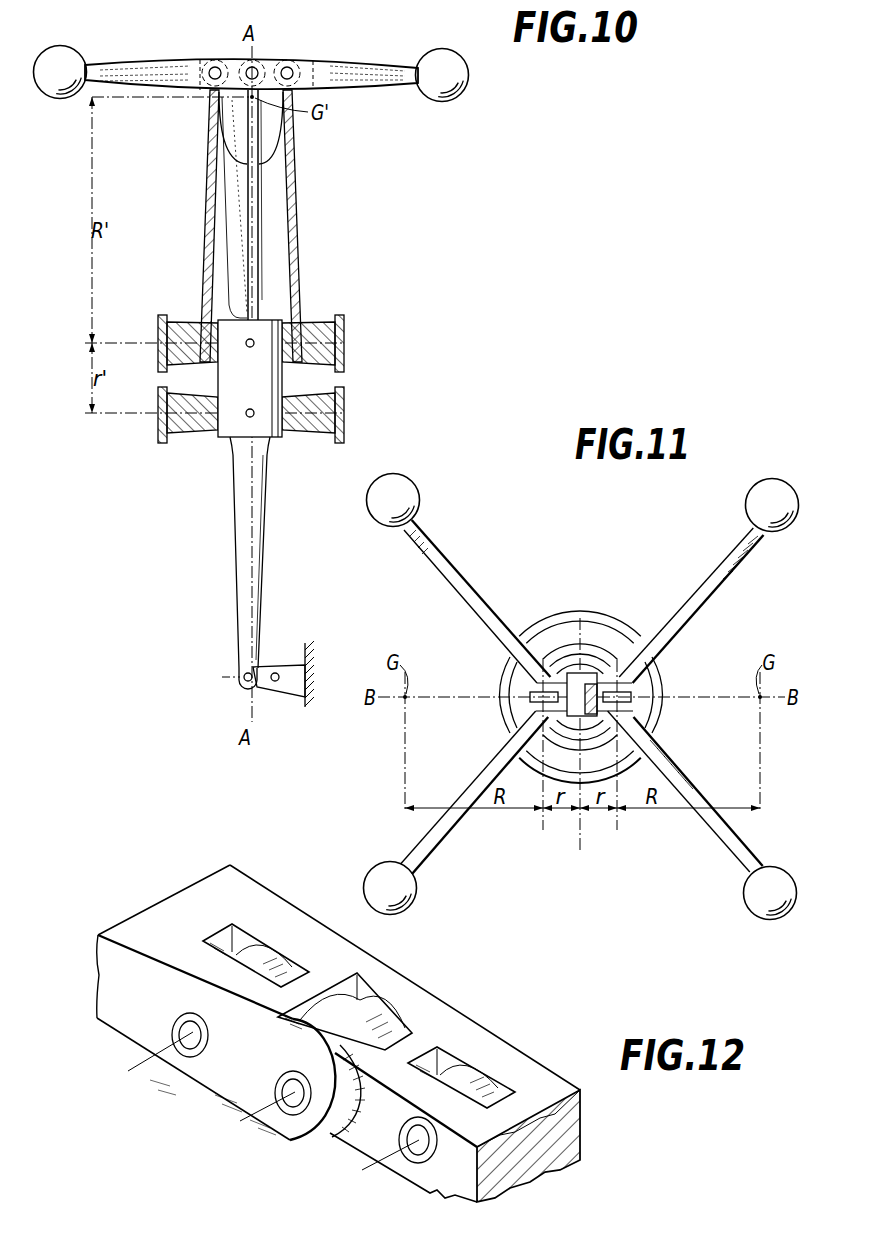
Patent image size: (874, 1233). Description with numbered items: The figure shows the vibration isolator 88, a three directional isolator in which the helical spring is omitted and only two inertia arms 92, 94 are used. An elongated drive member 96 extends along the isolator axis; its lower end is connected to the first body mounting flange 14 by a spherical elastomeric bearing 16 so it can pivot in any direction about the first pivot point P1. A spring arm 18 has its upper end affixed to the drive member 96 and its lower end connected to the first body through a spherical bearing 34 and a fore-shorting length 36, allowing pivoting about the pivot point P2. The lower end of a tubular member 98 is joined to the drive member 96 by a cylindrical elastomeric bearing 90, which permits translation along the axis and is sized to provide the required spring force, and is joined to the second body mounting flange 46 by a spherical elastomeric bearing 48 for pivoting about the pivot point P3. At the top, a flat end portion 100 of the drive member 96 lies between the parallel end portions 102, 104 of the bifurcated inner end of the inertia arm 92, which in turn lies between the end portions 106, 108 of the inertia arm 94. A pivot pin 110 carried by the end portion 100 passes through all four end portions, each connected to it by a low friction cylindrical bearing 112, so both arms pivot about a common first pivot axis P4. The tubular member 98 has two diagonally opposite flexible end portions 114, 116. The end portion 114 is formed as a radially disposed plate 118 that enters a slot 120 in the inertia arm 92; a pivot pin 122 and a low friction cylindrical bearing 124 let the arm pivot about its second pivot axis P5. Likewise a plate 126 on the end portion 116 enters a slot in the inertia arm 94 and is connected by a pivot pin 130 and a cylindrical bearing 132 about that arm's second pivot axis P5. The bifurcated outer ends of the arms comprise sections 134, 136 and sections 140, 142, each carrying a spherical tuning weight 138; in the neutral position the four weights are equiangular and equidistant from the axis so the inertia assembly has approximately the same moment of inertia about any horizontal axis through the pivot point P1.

In FIG. 10, the first body mounting flange 14 is at (345, 425).
In FIG. 10, the spherical elastomeric bearing 16 is at (308, 437).
In FIG. 10, the spring arm 18 is at (265, 542).
In FIG. 10, the spherical bearing 34 is at (263, 666).
In FIG. 10, the fore-shorting length 36 is at (262, 690).
In FIG. 10, the second body mounting flange 46 is at (345, 337).
In FIG. 10, the spherical elastomeric bearing 48 is at (338, 318).
In FIG. 10, the vibration isolator 88 is at (264, 190).
In FIG. 10, the cylindrical elastomeric bearing 90 is at (290, 362).
In FIG. 11, the inertia arm 92 is at (522, 680).
In FIG. 12, the inertia arm 92 is at (433, 1076).
In FIG. 11, the inertia arm 94 is at (640, 683).
In FIG. 12, the inertia arm 94 is at (338, 1011).
In FIG. 10, the drive member 96 is at (261, 284).
In FIG. 10, the tubular member 98 is at (300, 190).
In FIG. 10, the flat end portion 100 is at (257, 60).
In FIG. 12, the flat end portion 100 is at (379, 999).
In FIG. 12, the end portion 102 is at (288, 1012).
In FIG. 12, the end portion 104 is at (357, 973).
In FIG. 12, the end portion 106 is at (328, 1136).
In FIG. 12, the end portion 108 is at (455, 1012).
In FIG. 12, the pivot pin 110 is at (269, 1077).
In FIG. 12, the low friction cylindrical bearing 112 is at (280, 1080).
In FIG. 10, the end portion 114 is at (210, 142).
In FIG. 10, the end portion 116 is at (294, 135).
In FIG. 10, the radially disposed plate 118 is at (204, 62).
In FIG. 12, the radially disposed plate 118 is at (493, 1061).
In FIG. 12, the slot 120 is at (505, 1092).
In FIG. 12, the pivot pin 122 is at (413, 1150).
In FIG. 10, the low friction cylindrical bearing 124 is at (302, 260).
In FIG. 12, the low friction cylindrical bearing 124 is at (397, 1160).
In FIG. 10, the radially disposed plate 126 is at (298, 62).
In FIG. 12, the radially disposed plate 126 is at (215, 937).
In FIG. 12, the pivot pin 130 is at (192, 1040).
In FIG. 12, the low friction cylindrical bearing 132 is at (161, 1047).
In FIG. 11, the section 134 is at (462, 590).
In FIG. 11, the section 136 is at (440, 832).
In FIG. 10, the spherical tuning weight 138 is at (452, 92).
In FIG. 11, the spherical tuning weight 138 is at (748, 905).
In FIG. 11, the section 140 is at (728, 578).
In FIG. 11, the section 142 is at (730, 840).
In FIG. 10, the first pivot point P1 is at (245, 417).
In FIG. 10, the pivot point P2 is at (244, 673).
In FIG. 10, the pivot point P3 is at (246, 342).
In FIG. 11, the first pivot axis P4 is at (583, 746).
In FIG. 12, the first pivot axis P4 is at (240, 1121).
In FIG. 11, the second pivot axis P5 is at (586, 756).
In FIG. 12, the second pivot axis P5 is at (362, 1170).